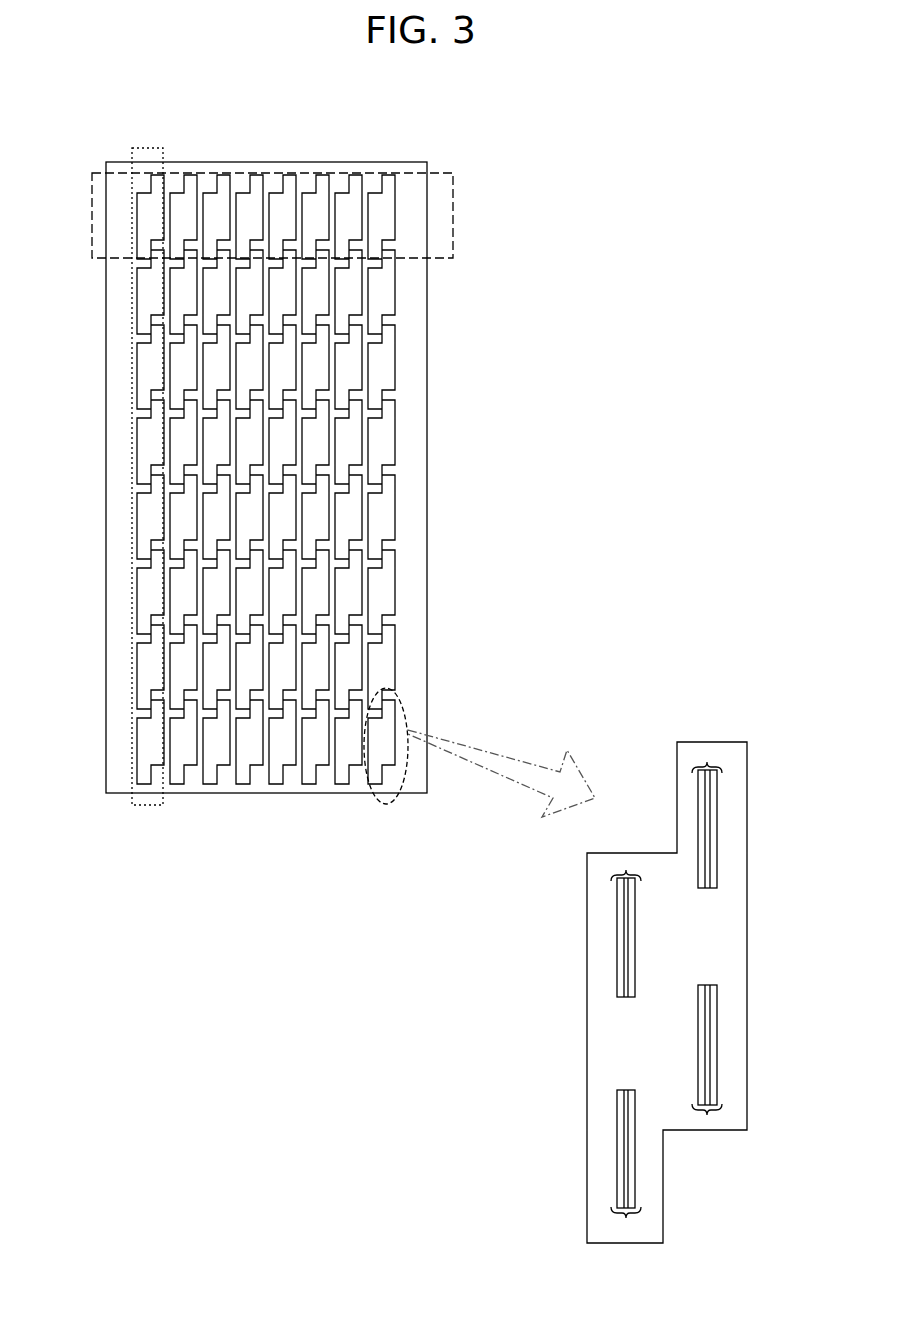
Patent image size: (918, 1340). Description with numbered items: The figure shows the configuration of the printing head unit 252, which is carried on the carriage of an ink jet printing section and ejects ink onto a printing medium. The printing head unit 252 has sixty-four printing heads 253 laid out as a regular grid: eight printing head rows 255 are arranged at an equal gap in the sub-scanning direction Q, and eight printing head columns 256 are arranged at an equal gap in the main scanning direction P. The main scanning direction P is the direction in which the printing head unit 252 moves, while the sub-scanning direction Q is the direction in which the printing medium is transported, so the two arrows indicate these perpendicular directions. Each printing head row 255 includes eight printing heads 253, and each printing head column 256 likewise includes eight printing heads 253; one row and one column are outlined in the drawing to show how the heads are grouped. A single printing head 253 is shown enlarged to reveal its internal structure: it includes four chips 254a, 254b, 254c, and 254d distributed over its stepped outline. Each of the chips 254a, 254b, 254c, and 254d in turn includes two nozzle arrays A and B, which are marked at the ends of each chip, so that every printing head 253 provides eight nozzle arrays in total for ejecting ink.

The printing head unit 252 is at (363, 162).
The printing head 253 is at (402, 707).
The chip 254a is at (627, 1220).
The chip 254b is at (715, 1118).
The chip 254c is at (627, 867).
The chip 254d is at (707, 758).
The printing head row 255 is at (453, 210).
The printing head column 256 is at (157, 148).
The nozzle array A is at (712, 888).
The nozzle array B is at (700, 888).
The main scanning direction P is at (107, 110).
The sub-scanning direction Q is at (49, 157).